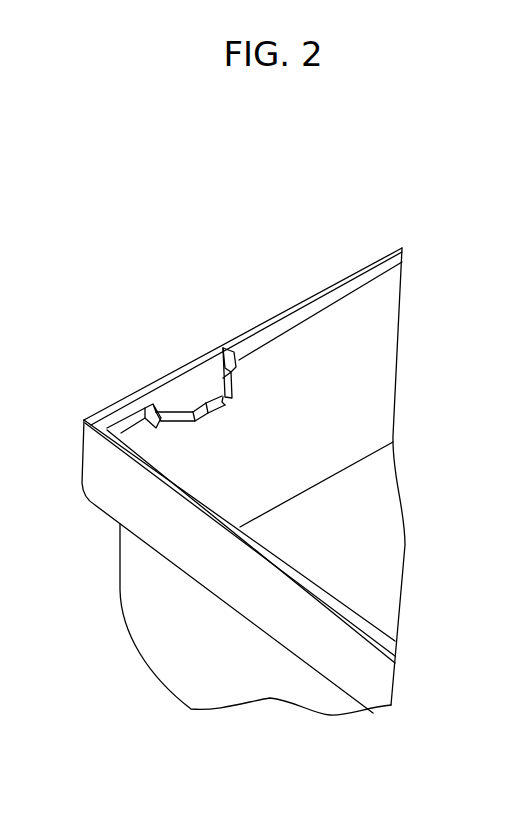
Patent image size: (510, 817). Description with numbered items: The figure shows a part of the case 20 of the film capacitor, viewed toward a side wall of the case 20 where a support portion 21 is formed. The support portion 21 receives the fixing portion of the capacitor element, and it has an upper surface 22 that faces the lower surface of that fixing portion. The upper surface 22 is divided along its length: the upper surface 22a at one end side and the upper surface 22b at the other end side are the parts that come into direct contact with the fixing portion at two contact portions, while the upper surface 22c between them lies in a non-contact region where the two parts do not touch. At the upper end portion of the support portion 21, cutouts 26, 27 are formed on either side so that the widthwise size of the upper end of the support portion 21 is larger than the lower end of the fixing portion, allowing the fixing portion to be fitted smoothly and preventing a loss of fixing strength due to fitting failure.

The case 20 is at (138, 618).
The support portion 21 is at (335, 243).
The upper surface 22 is at (82, 293).
The upper surface at one end side 22a is at (148, 418).
The upper surface at the other end side 22b is at (205, 405).
The upper surface 22c is at (186, 410).
The cutout 26 is at (136, 402).
The cutout 27 is at (234, 348).